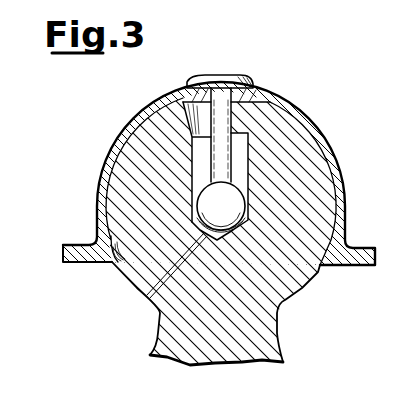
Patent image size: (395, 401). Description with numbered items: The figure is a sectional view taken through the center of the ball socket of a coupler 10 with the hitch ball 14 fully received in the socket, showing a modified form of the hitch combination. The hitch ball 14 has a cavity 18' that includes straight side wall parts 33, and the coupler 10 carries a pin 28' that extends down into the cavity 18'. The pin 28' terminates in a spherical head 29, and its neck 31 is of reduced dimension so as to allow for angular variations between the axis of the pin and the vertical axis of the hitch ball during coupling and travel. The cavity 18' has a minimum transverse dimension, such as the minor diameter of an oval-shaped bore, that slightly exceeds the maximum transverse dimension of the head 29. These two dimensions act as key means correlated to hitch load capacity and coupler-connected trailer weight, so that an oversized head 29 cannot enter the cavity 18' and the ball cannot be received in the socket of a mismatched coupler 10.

The coupler 10 is at (123, 129).
The hitch ball 14 is at (300, 292).
The cavity 18' is at (197, 220).
The pin 28' is at (242, 124).
The spherical head 29 is at (208, 208).
The neck 31 is at (212, 122).
The straight side wall parts 33 is at (242, 172).